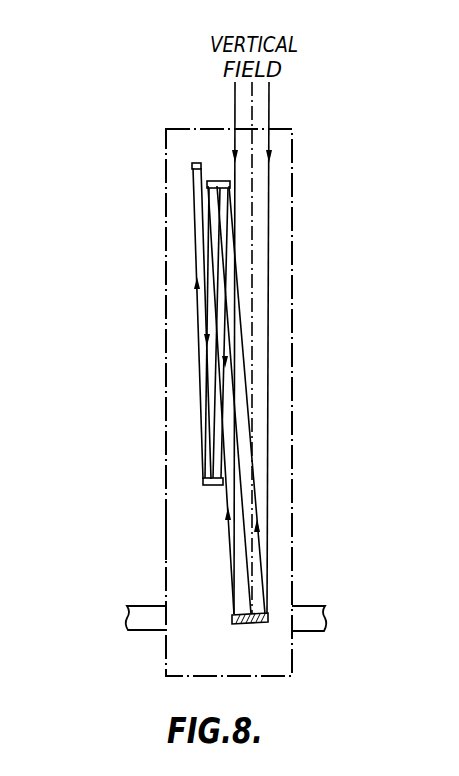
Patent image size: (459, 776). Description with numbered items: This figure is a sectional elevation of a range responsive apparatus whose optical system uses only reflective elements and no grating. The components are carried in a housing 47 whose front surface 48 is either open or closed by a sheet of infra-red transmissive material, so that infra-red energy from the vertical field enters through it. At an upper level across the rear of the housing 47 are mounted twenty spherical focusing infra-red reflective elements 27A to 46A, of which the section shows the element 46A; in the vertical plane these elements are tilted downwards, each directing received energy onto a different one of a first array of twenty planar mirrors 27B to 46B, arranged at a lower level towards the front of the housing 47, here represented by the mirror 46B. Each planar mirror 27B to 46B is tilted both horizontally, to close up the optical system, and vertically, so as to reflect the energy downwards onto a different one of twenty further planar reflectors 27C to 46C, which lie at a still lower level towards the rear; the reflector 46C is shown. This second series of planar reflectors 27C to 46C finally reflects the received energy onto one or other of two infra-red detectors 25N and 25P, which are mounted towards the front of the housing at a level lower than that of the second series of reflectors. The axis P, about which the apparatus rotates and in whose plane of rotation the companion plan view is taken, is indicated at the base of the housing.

The front surface 48 is at (213, 128).
The housing 47 is at (166, 521).
The axis of rotation P is at (312, 617).
The infra-red detector 25P is at (193, 163).
The infra-red detector 25N is at (206, 323).
The planar mirror 27B is at (313, 179).
The planar mirror 46B is at (230, 182).
The planar reflector 27C is at (140, 492).
The planar reflector 46C is at (203, 484).
The spherical focusing infra-red reflective element 27A is at (161, 642).
The spherical focusing infra-red reflective element 46A is at (232, 621).